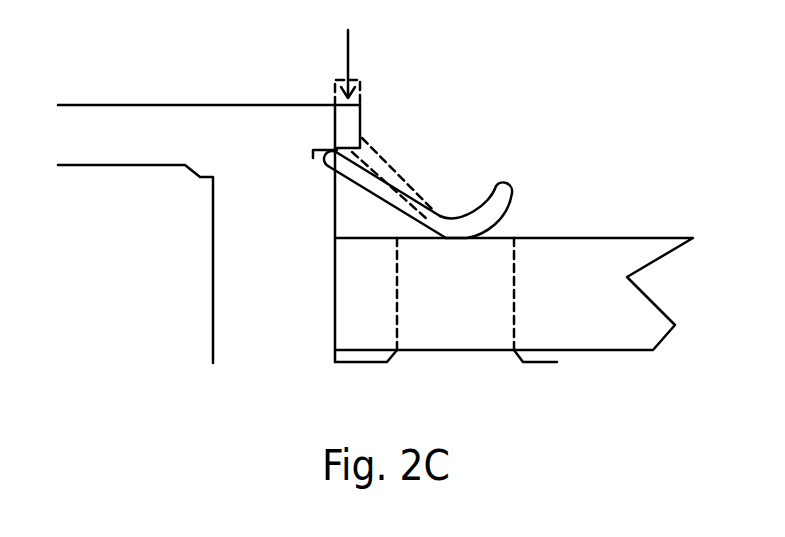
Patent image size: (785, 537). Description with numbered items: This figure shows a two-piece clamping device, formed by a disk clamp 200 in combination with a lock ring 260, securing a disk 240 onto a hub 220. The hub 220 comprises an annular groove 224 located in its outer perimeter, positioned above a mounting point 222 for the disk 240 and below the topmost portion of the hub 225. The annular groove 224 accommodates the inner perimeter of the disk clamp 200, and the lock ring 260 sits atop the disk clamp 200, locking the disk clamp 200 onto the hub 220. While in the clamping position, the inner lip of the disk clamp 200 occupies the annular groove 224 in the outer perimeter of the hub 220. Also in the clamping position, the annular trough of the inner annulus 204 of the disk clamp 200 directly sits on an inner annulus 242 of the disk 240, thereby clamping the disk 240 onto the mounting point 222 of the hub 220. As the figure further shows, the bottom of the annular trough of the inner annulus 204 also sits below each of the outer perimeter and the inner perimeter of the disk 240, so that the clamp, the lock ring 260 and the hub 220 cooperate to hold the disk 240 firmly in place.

The disk clamp 200 is at (500, 256).
The inner annulus 204 is at (460, 218).
The hub 220 is at (171, 148).
The mounting point 222 is at (472, 358).
The annular groove 224 is at (315, 155).
The topmost portion of the hub 225 is at (228, 104).
The disk 240 is at (603, 314).
The inner annulus of the disk 242 is at (435, 298).
The lock ring 260 is at (468, 50).